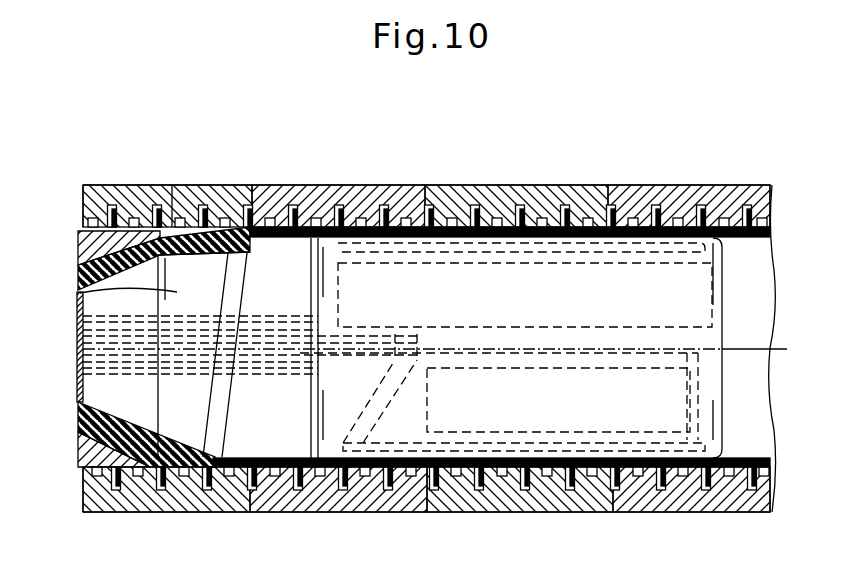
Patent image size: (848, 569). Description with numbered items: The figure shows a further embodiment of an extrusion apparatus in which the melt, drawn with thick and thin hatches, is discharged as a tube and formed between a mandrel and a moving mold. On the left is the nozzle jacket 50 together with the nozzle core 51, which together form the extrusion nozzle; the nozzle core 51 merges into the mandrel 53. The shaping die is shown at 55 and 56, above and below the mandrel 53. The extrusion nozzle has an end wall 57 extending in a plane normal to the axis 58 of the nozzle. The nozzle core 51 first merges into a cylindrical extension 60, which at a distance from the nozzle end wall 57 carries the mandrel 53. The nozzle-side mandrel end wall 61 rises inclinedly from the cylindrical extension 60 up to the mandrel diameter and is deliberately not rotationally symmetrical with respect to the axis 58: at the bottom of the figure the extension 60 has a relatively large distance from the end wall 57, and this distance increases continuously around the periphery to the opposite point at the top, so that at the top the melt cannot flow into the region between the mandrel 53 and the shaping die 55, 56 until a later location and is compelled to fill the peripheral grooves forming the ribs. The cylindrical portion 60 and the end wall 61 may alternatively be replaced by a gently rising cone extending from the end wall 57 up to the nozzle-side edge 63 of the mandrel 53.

The nozzle jacket 50 is at (78, 233).
The nozzle core 51 is at (113, 390).
The mandrel 53 is at (278, 417).
The shaping die 55 is at (406, 185).
The shaping die 56 is at (450, 512).
The end wall 57 is at (172, 185).
The axis 58 is at (748, 349).
The cylindrical extension 60 is at (80, 300).
The nozzle-side mandrel end wall 61 is at (233, 282).
The nozzle-side edge 63 is at (300, 303).